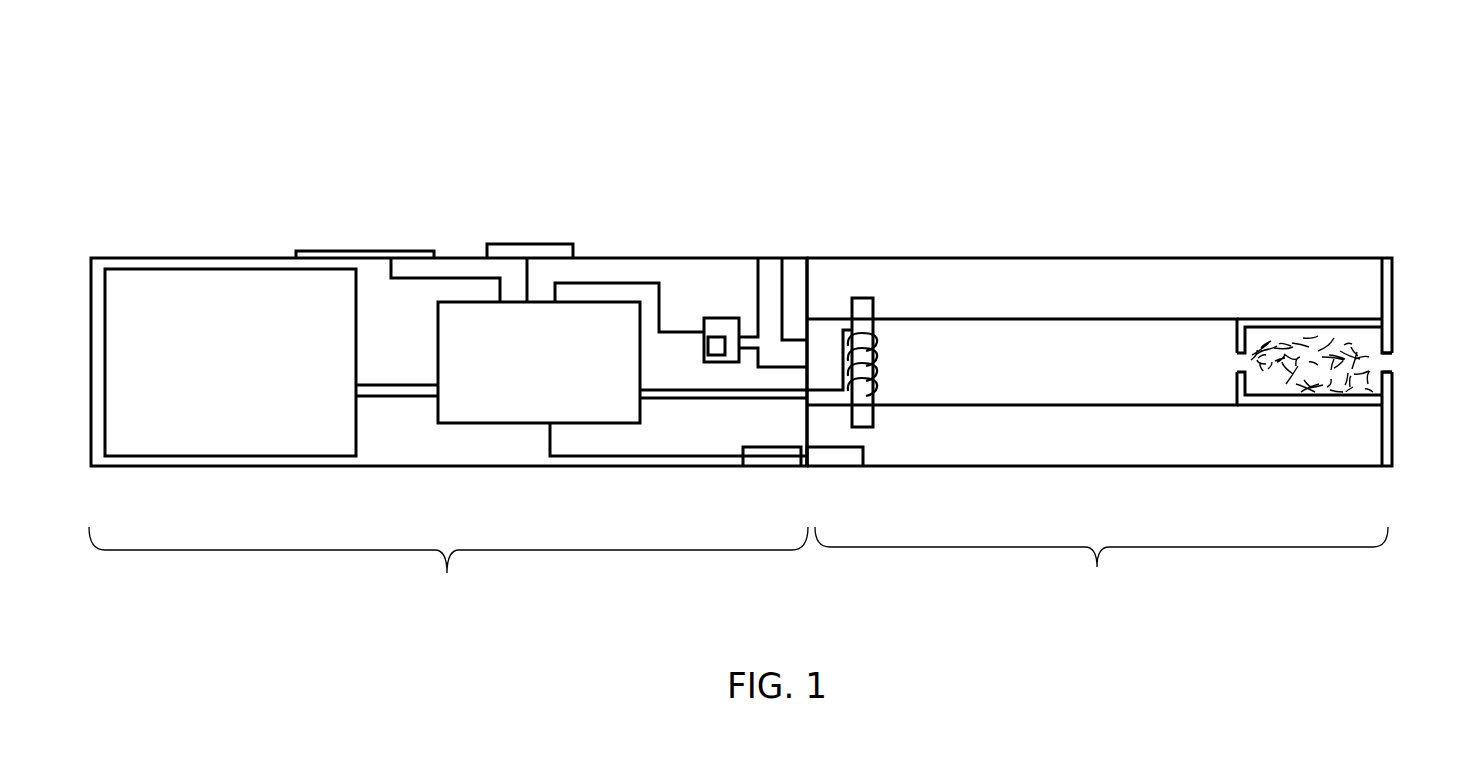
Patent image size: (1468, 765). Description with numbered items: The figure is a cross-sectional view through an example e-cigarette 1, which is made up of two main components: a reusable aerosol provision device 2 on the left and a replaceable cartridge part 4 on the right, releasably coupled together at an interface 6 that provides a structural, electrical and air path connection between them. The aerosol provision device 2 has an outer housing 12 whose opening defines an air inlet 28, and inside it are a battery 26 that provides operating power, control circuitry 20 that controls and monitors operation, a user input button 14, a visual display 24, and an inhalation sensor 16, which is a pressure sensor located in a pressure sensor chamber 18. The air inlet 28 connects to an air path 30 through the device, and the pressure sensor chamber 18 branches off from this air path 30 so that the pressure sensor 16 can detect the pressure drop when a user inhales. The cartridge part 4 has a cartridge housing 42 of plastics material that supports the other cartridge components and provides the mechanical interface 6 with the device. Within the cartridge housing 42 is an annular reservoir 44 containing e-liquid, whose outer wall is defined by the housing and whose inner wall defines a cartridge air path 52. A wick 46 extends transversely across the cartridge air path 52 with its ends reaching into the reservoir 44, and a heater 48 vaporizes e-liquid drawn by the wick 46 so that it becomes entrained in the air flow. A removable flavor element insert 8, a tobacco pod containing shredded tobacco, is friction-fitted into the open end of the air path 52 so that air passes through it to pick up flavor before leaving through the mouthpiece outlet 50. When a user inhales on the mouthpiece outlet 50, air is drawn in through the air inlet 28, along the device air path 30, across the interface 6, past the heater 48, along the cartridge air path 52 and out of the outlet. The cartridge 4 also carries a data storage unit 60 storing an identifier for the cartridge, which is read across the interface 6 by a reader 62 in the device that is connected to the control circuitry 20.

The e-cigarette 1 is at (1187, 128).
The aerosol provision device 2 is at (448, 583).
The cartridge part 4 is at (1101, 584).
The interface 6 is at (807, 467).
The flavor element insert 8 is at (1237, 391).
The outer housing 12 is at (113, 257).
The user input button 14 is at (537, 243).
The inhalation sensor 16 is at (707, 351).
The pressure sensor chamber 18 is at (733, 318).
The control circuitry 20 is at (492, 346).
The visual display 24 is at (352, 250).
The battery 26 is at (166, 321).
The air inlet 28 is at (770, 272).
The air path 30 is at (766, 296).
The cartridge housing 42 is at (1003, 257).
The reservoir 44 is at (1355, 311).
The wick 46 is at (857, 297).
The heater 48 is at (877, 372).
The mouthpiece outlet 50 is at (1392, 362).
The cartridge air path 52 is at (1097, 370).
The data storage unit 60 is at (848, 458).
The reader 62 is at (764, 456).